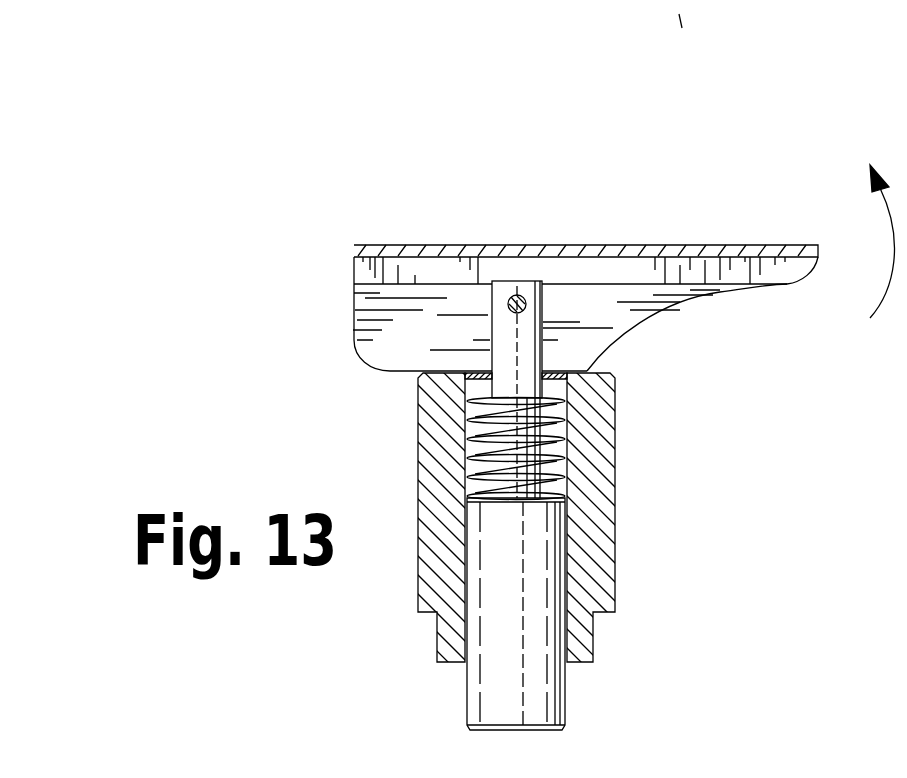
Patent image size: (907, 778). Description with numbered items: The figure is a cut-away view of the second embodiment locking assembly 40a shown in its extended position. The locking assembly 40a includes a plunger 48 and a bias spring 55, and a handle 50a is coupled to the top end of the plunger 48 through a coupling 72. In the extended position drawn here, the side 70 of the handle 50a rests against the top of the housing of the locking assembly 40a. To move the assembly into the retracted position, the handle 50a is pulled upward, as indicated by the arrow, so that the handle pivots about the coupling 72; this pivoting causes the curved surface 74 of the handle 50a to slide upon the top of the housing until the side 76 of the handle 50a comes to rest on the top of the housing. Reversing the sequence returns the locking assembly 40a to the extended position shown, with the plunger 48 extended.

The handle 50a is at (707, 245).
The side of the handle 76 is at (353, 303).
The curved surface of the handle 74 is at (362, 358).
The side of the handle 70 is at (563, 369).
The coupling 72 is at (512, 296).
The bias spring 55 is at (567, 393).
The locking assembly 40a is at (418, 433).
The plunger 48 is at (566, 705).